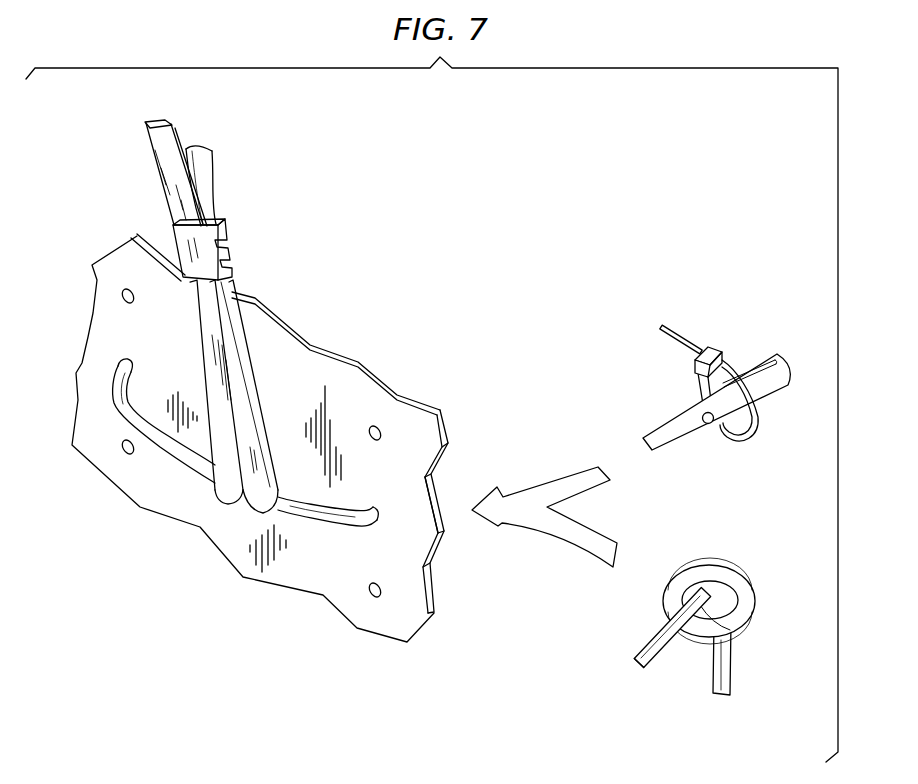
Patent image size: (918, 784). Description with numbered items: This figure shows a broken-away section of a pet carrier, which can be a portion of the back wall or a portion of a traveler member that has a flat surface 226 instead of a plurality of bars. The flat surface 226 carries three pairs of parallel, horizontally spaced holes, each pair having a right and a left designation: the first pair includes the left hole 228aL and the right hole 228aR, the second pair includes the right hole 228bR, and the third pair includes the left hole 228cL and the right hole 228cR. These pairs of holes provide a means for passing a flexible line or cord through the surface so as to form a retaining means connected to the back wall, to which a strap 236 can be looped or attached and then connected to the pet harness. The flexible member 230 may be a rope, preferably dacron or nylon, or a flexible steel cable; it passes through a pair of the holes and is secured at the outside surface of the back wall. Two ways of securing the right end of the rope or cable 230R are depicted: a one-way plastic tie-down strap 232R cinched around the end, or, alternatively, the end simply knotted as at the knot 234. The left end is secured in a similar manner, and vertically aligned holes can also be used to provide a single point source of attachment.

The flat surface 226 is at (180, 511).
The left hole of first pair 228aL is at (125, 289).
The left hole of third pair 228cL is at (122, 447).
The right hole of first pair 228aR is at (373, 425).
The right hole of second pair 228bR is at (423, 563).
The right hole of third pair 228cR is at (376, 598).
The flexible member 230 is at (117, 389).
The right end of the rope or cable 230R is at (775, 352).
The one way plastic tie down strap 232R is at (707, 347).
The knot 234 is at (745, 549).
The strap 236 is at (216, 387).